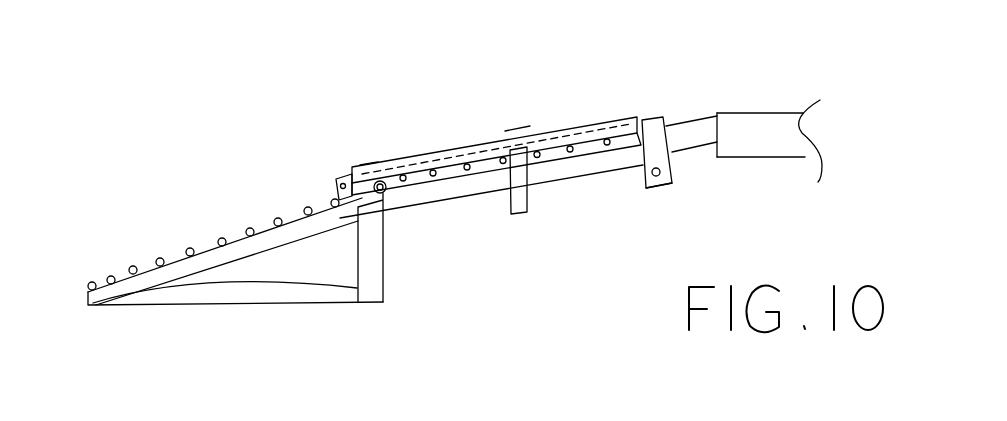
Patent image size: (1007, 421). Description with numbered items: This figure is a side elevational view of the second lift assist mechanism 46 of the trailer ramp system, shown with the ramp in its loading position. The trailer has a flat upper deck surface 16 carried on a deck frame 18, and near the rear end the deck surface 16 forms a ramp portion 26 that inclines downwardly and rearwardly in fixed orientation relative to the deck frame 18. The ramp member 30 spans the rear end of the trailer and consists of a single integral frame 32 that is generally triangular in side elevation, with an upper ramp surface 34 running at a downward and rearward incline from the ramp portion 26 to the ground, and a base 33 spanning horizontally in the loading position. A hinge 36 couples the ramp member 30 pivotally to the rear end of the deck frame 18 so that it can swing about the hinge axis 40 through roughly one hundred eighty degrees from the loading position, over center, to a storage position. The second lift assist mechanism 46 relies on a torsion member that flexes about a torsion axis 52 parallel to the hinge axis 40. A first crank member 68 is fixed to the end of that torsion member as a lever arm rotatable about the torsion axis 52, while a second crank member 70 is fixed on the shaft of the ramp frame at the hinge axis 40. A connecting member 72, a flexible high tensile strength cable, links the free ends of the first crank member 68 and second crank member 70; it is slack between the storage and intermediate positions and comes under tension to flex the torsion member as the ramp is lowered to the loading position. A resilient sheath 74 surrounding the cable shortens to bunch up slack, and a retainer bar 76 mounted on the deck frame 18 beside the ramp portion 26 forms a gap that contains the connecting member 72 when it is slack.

The deck surface 16 is at (750, 113).
The deck frame 18 is at (760, 160).
The ramp portion 26 is at (692, 118).
The ramp member 30 is at (208, 332).
The frame 32 is at (253, 293).
The base 33 is at (327, 295).
The upper ramp surface 34 is at (174, 260).
The hinge 36 is at (383, 117).
The hinge axis 40 is at (387, 192).
The second lift assist mechanism 46 is at (521, 72).
The torsion axis 52 is at (647, 185).
The first crank member 68 is at (655, 152).
The second crank member 70 is at (332, 190).
The connecting member 72 is at (436, 160).
The resilient sheath 74 is at (555, 128).
The retainer bar 76 is at (528, 177).